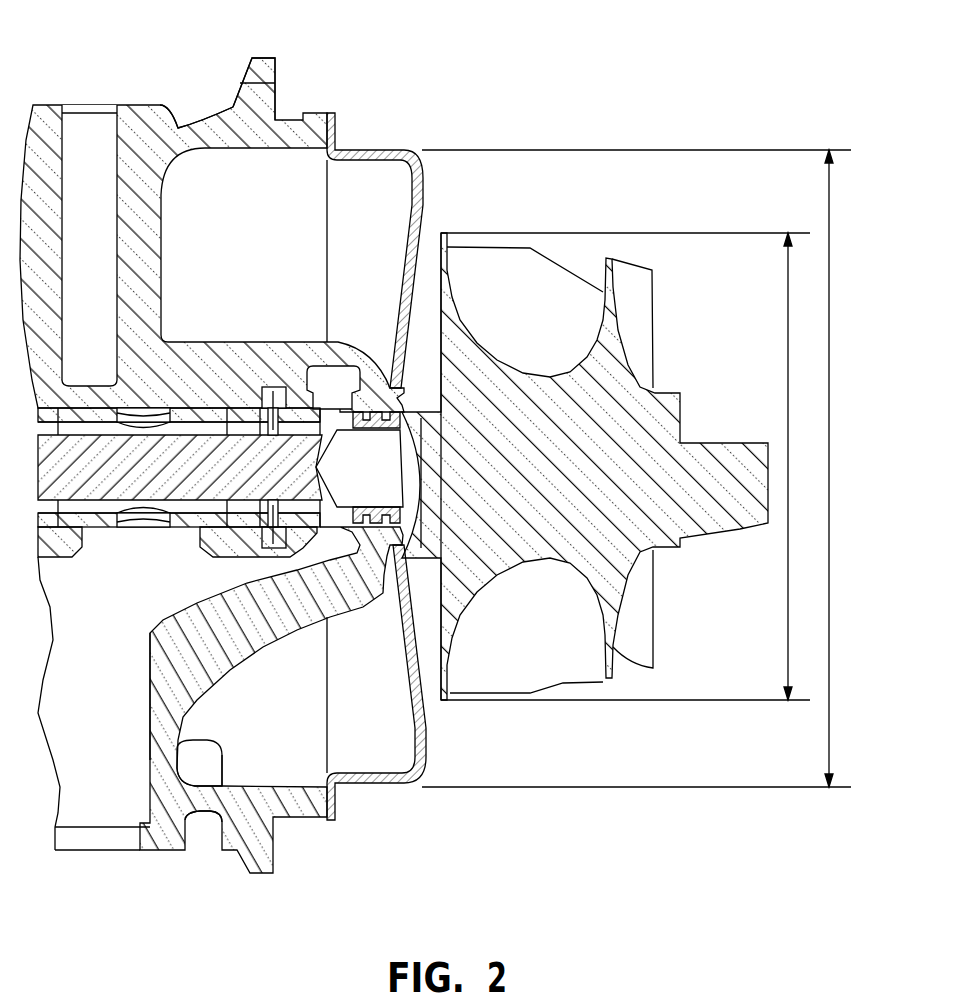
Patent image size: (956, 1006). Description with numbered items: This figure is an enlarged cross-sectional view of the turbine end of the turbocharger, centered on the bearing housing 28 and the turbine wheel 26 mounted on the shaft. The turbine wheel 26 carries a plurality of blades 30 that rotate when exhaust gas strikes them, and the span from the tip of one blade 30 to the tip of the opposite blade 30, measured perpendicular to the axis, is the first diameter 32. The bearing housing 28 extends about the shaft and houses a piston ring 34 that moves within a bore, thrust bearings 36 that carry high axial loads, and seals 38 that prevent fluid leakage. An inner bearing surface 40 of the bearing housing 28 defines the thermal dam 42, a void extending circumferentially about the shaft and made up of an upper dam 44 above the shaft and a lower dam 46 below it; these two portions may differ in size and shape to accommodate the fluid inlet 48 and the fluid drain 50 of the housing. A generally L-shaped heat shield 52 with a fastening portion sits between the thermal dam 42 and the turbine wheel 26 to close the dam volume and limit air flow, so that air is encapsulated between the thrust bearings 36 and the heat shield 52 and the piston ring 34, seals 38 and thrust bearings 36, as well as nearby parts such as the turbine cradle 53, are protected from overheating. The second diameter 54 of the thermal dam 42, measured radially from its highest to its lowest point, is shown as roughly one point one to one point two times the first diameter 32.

The turbine wheel 26 is at (650, 428).
The bearing housing 28 is at (135, 133).
The blades 30 is at (447, 700).
The first diameter 32 is at (790, 603).
The piston ring 34 is at (425, 640).
The thrust bearings 36 is at (277, 387).
The seals 38 is at (130, 524).
The inner bearing surface 40 is at (186, 115).
The thermal dam 42 is at (313, 187).
The upper dam 44 is at (313, 217).
The lower dam 46 is at (213, 760).
The fluid inlet 48 is at (85, 133).
The fluid drain 50 is at (97, 817).
The heat shield 52 is at (340, 130).
The turbine cradle 53 is at (250, 560).
The second diameter 54 is at (830, 737).